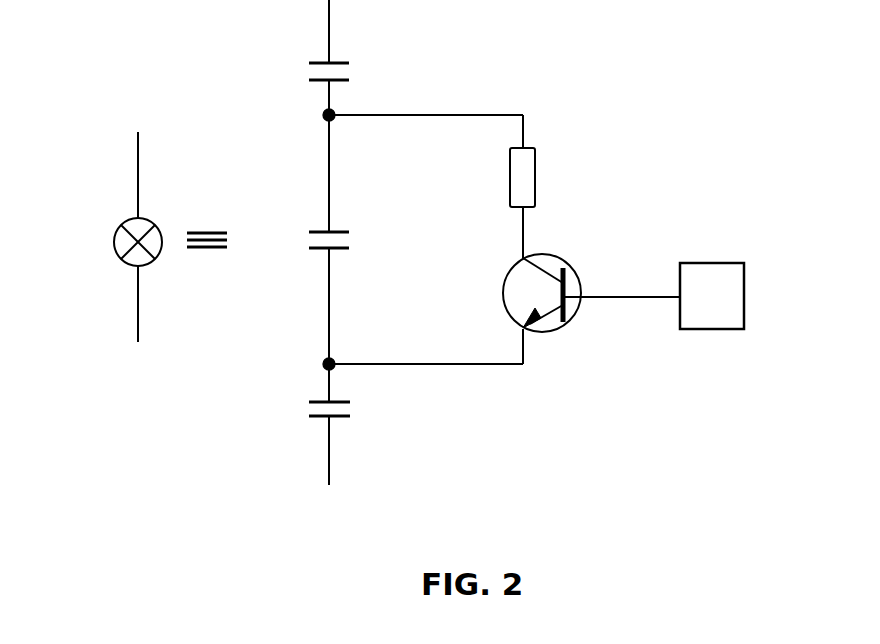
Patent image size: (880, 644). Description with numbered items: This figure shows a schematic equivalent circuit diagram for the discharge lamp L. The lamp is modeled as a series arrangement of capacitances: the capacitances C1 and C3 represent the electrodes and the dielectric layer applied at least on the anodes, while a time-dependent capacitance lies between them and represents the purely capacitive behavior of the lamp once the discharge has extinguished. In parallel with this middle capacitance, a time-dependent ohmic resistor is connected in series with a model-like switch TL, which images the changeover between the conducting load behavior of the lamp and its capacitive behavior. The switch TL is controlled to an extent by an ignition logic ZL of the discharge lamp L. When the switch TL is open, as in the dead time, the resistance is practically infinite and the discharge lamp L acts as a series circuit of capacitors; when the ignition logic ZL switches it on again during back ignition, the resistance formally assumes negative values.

The discharge lamp L is at (122, 237).
The capacitance C1 is at (355, 73).
The capacitance C3 is at (354, 409).
The model-like switch TL is at (591, 323).
The ignition logic ZL is at (712, 296).